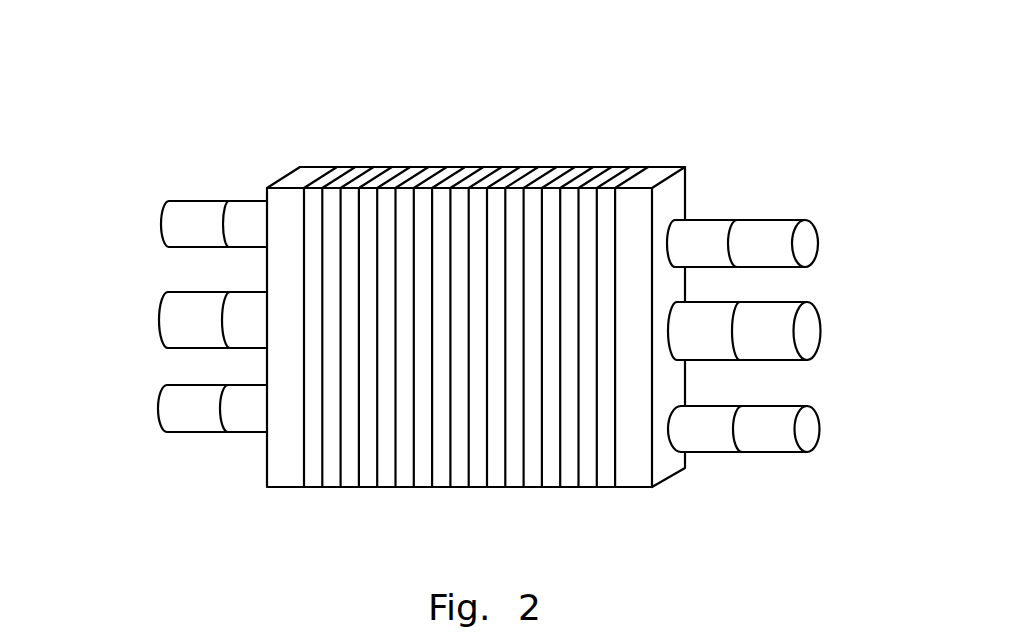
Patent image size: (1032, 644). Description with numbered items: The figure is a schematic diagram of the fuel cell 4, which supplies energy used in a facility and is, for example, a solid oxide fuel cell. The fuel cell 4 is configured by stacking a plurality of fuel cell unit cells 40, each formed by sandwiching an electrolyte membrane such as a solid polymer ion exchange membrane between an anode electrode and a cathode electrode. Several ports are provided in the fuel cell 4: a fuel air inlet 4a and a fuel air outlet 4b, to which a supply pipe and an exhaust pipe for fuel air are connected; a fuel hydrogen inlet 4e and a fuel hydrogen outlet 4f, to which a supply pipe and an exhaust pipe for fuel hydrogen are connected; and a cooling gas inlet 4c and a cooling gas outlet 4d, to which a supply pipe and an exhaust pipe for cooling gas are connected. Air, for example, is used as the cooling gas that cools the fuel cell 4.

The fuel cell 4 is at (605, 78).
The fuel cell unit cell 40 is at (348, 168).
The fuel air inlet 4a is at (167, 223).
The fuel air outlet 4b is at (797, 405).
The cooling gas inlet 4c is at (777, 302).
The cooling gas outlet 4d is at (163, 303).
The fuel hydrogen inlet 4e is at (775, 220).
The fuel hydrogen outlet 4f is at (165, 410).